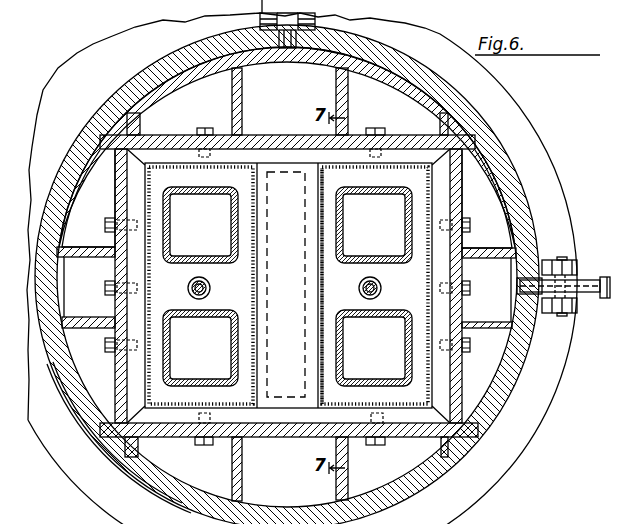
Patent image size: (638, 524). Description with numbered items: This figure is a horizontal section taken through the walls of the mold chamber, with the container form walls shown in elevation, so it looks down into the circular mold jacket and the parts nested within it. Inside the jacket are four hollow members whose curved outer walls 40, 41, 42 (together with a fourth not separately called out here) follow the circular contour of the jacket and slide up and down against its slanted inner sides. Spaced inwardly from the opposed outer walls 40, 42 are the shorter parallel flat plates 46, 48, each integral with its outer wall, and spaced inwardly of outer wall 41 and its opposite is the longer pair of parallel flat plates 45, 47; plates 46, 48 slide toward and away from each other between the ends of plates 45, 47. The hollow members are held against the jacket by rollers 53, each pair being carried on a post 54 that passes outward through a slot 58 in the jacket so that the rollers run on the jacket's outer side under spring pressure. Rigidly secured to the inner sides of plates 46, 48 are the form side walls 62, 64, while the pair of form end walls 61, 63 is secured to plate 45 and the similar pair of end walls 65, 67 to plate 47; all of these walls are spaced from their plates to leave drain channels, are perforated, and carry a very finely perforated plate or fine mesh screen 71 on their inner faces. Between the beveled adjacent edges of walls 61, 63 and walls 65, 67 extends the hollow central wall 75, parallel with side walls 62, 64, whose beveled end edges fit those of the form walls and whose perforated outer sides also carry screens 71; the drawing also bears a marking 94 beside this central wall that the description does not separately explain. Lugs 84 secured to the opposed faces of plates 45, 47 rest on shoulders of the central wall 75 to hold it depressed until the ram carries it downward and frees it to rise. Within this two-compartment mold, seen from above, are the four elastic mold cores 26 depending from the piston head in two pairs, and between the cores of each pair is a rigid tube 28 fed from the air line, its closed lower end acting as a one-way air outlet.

The elastic mold core 26 is at (210, 312).
The rigid tube 28 is at (188, 290).
The outer wall 40 is at (517, 252).
The outer wall 41 is at (396, 82).
The outer wall 42 is at (75, 390).
The flat plate 45 is at (340, 137).
The flat plate 46 is at (455, 313).
The flat plate 47 is at (354, 438).
The flat plate 48 is at (120, 316).
The roller 53 is at (578, 262).
The post 54 is at (598, 283).
The slot 58 is at (531, 300).
The end wall 61 is at (396, 152).
The side wall 62 is at (440, 203).
The end wall 63 is at (245, 153).
The side wall 64 is at (118, 262).
The end wall 65 is at (418, 420).
The end wall 67 is at (223, 438).
The fine mesh screen 71 is at (178, 404).
The hollow central wall 75 is at (320, 240).
The lug 84 is at (283, 160).
The panel edge 94 is at (248, 213).